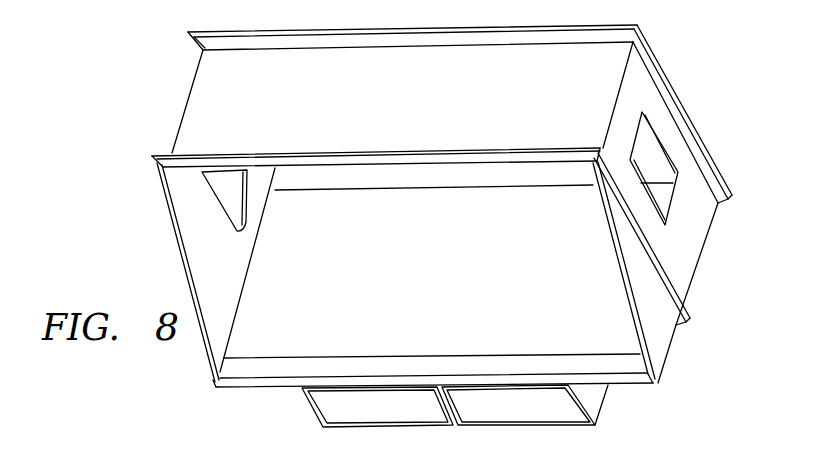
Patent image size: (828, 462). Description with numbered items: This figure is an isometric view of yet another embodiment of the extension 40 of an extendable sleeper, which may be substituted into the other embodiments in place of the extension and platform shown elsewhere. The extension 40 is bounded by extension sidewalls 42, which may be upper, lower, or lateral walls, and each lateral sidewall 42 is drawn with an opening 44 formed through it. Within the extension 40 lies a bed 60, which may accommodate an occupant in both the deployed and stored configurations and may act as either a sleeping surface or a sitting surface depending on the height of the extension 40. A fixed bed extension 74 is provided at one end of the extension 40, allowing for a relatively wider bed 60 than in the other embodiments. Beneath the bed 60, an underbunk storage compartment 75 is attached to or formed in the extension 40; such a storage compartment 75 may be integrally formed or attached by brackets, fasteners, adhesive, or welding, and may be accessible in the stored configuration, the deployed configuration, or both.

The extension 40 is at (150, 66).
The extension sidewall 42 is at (411, 110).
The slot 44 is at (662, 143).
The bed 60 is at (465, 289).
The fixed bed extension 74 is at (663, 340).
The storage compartment 75 is at (323, 408).